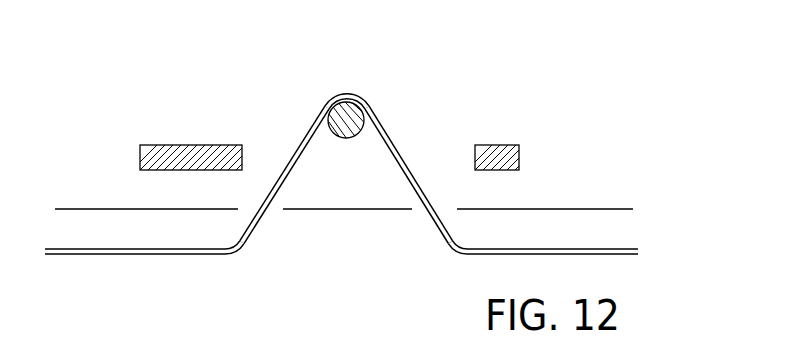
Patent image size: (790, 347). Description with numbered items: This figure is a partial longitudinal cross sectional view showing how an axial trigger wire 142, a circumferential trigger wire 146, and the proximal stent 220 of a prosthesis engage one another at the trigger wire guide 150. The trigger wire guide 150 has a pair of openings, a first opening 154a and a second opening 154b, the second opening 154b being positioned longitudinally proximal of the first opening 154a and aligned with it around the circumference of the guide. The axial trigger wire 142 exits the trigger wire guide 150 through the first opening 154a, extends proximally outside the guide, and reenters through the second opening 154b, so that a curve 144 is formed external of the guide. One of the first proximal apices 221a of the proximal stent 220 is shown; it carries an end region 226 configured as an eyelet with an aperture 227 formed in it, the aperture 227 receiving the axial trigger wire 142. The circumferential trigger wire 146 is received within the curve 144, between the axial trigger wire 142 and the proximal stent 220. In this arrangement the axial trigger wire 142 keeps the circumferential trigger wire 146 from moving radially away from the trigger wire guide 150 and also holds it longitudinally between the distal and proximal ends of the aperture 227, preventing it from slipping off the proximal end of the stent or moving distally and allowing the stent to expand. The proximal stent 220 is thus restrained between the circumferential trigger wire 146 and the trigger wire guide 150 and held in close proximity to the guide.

The axial trigger wire 142 is at (630, 249).
The curve 144 is at (345, 97).
The circumferential trigger wire 146 is at (364, 126).
The trigger wire guide 150 is at (495, 208).
The first opening 154a is at (271, 215).
The second opening 154b is at (417, 215).
The proximal stent 220 is at (176, 99).
The first proximal apex 221a is at (508, 144).
The end region 226 is at (205, 144).
The aperture 227 is at (265, 155).